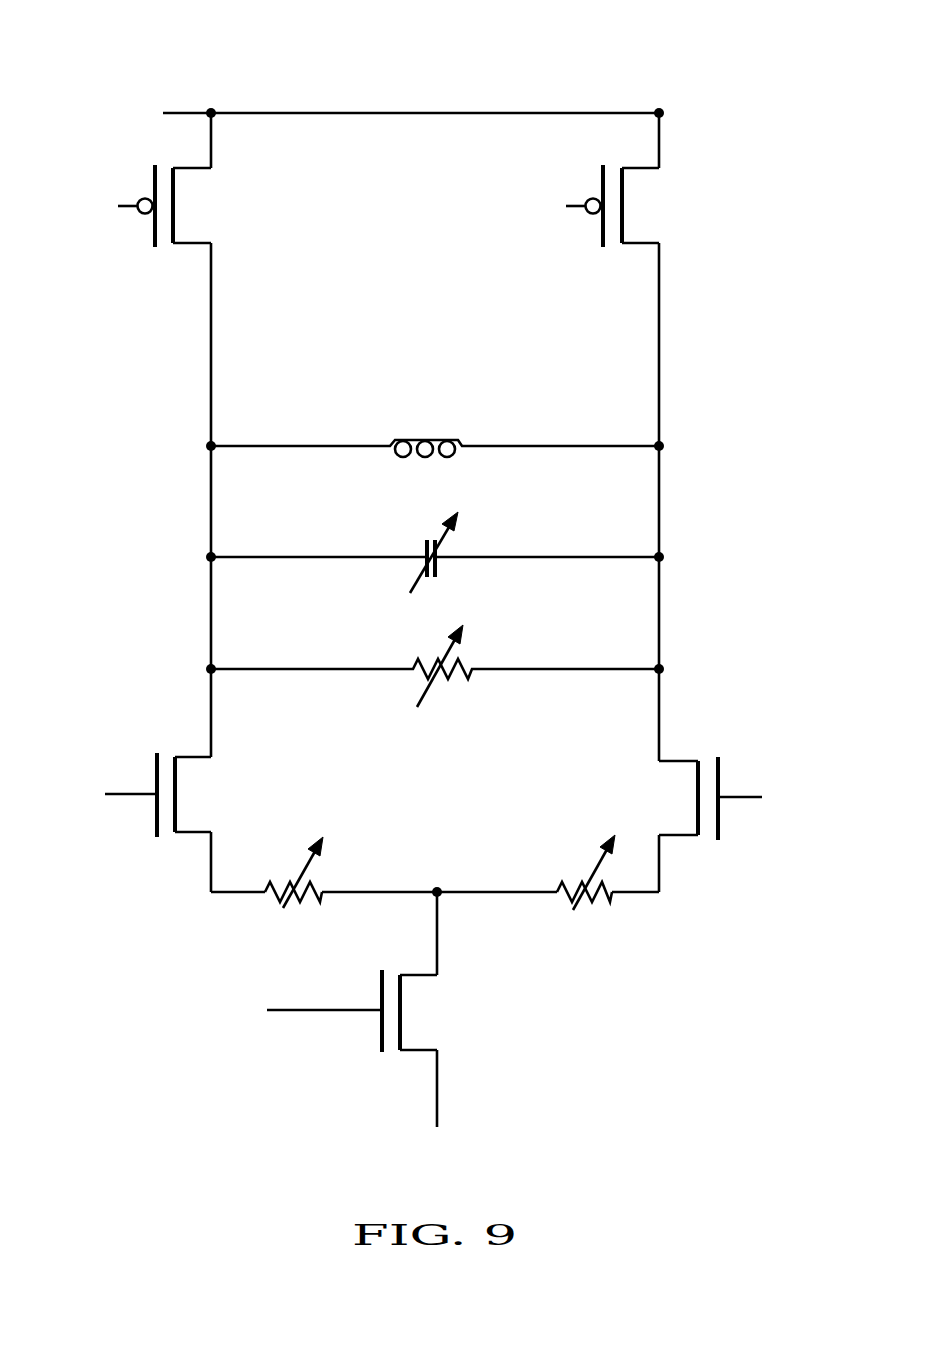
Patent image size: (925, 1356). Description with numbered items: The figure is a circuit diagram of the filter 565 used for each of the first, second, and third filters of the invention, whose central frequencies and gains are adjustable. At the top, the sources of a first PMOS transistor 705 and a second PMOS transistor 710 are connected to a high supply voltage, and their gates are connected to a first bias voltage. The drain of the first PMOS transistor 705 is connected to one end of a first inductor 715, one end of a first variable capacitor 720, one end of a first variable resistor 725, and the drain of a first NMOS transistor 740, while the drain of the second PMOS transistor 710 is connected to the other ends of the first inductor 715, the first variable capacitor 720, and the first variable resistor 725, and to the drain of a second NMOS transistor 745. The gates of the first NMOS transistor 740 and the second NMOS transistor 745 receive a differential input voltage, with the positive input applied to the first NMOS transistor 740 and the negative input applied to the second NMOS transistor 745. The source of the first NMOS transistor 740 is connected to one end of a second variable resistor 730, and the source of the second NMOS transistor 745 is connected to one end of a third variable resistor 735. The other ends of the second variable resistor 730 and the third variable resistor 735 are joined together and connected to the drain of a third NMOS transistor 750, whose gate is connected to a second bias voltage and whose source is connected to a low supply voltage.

The filter 565 is at (109, 41).
The first PMOS transistor 705 is at (212, 215).
The second PMOS transistor 710 is at (648, 205).
The first inductor 715 is at (458, 433).
The first variable capacitor 720 is at (423, 540).
The first variable resistor 725 is at (413, 663).
The second variable resistor 730 is at (317, 880).
The third variable resistor 735 is at (557, 887).
The first NMOS transistor 740 is at (157, 773).
The second NMOS transistor 745 is at (722, 765).
The third NMOS transistor 750 is at (378, 988).